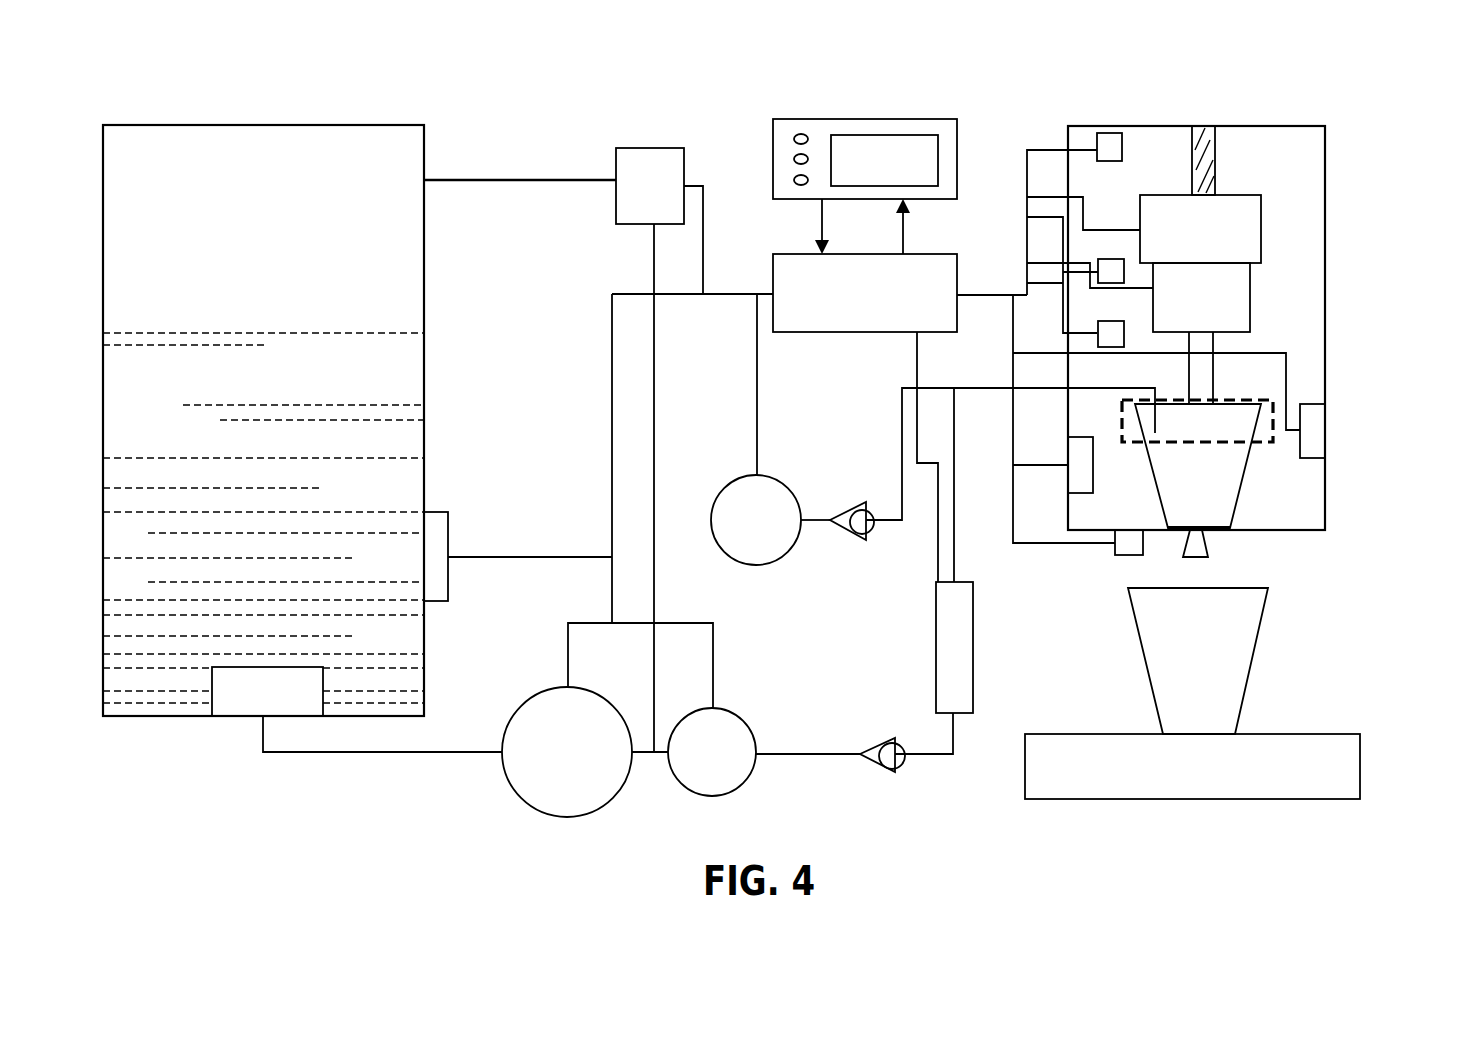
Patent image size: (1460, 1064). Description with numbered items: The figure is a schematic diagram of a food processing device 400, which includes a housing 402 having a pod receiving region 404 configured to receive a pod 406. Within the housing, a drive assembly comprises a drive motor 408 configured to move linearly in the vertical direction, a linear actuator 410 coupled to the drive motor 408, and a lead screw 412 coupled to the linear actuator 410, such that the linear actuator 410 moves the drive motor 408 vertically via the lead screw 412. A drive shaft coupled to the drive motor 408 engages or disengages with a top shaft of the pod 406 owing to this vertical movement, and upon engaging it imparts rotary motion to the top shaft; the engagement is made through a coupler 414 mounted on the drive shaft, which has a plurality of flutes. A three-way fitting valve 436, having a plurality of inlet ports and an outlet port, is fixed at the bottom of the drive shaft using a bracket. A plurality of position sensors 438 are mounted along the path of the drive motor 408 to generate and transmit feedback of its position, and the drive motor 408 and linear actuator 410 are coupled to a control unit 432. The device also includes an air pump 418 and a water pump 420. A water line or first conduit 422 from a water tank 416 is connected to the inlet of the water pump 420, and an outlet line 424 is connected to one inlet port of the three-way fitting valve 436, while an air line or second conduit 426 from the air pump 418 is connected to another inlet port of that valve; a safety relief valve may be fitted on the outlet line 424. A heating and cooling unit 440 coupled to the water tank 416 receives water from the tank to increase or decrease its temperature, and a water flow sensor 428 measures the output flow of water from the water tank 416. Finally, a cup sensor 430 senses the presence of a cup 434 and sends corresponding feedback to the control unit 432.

The food processing device 400 is at (1298, 52).
The housing 402 is at (1325, 142).
The pod receiving region 404 is at (1326, 690).
The pod 406 is at (1215, 505).
The drive motor 408 is at (1223, 302).
The linear actuator 410 is at (1243, 245).
The lead screw 412 is at (1212, 176).
The coupler 414 is at (1197, 378).
The water tank 416 is at (425, 145).
The air pump 418 is at (766, 543).
The water pump 420 is at (598, 787).
The first conduit 422 is at (343, 755).
The outlet line 424 is at (785, 757).
The second conduit 426 is at (902, 407).
The water flow sensor 428 is at (620, 194).
The cup sensor 430 is at (1128, 557).
The control unit 432 is at (870, 332).
The cup 434 is at (1253, 657).
The three-way fitting valve 436 is at (1273, 405).
The position sensors 438 is at (1122, 143).
The heating and cooling unit 440 is at (950, 643).